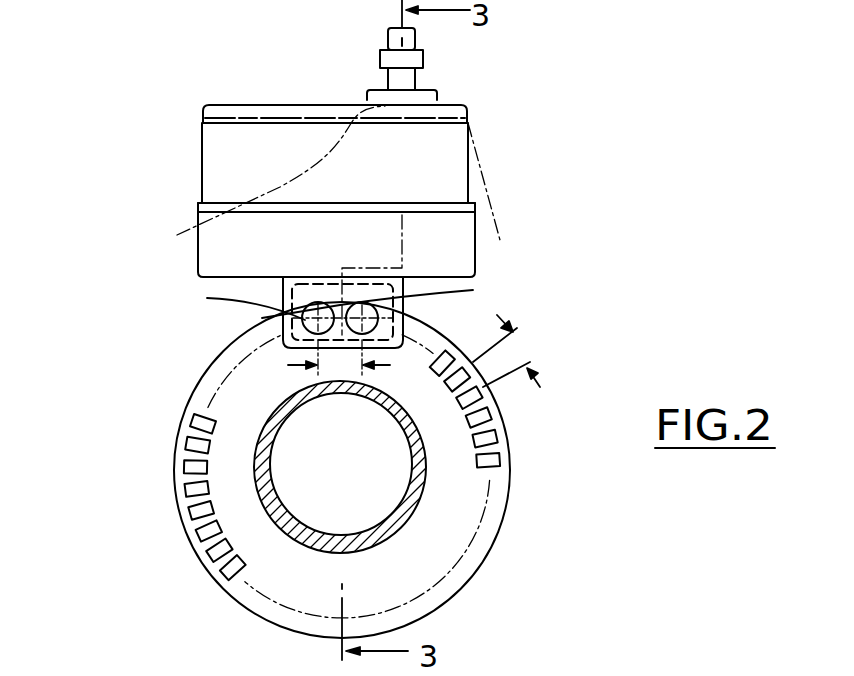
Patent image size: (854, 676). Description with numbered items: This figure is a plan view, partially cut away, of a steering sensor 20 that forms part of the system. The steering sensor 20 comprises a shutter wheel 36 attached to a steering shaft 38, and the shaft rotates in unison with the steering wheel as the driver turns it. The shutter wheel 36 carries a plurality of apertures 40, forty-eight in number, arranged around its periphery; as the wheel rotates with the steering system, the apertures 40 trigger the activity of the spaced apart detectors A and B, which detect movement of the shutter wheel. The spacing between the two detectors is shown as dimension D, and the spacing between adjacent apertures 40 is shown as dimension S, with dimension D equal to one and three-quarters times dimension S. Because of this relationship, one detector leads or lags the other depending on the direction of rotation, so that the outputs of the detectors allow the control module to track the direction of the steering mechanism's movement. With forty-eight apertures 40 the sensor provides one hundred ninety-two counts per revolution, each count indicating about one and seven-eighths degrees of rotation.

The steering sensor 20 is at (560, 95).
The shutter wheel 36 is at (503, 500).
The steering shaft 38 is at (408, 503).
The apertures 40 is at (503, 465).